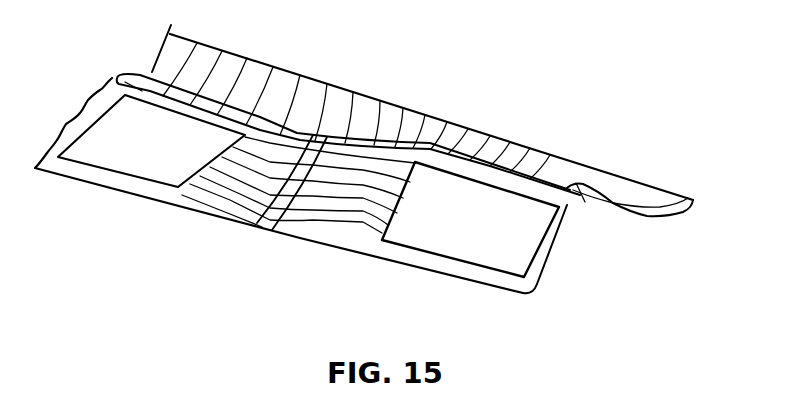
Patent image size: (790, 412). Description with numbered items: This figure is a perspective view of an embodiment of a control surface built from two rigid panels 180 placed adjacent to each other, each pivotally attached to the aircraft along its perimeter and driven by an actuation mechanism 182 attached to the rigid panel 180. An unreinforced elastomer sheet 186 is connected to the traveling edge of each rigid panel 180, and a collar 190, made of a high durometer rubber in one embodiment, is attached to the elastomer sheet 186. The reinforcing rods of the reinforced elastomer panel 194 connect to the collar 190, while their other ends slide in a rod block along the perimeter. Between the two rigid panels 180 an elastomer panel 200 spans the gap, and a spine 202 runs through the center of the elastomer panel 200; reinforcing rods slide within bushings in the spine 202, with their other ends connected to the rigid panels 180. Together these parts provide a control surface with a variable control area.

The rigid panel 180 is at (153, 151).
The actuation mechanism 182 is at (93, 175).
The elastomer sheet 186 is at (110, 80).
The collar 190 is at (135, 70).
The reinforced elastomer panel 194 is at (308, 103).
The elastomer panel 200 is at (245, 231).
The spine 202 is at (245, 226).